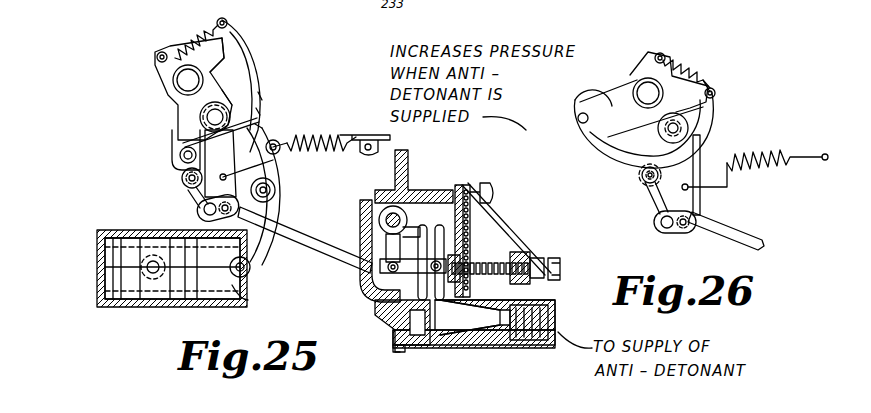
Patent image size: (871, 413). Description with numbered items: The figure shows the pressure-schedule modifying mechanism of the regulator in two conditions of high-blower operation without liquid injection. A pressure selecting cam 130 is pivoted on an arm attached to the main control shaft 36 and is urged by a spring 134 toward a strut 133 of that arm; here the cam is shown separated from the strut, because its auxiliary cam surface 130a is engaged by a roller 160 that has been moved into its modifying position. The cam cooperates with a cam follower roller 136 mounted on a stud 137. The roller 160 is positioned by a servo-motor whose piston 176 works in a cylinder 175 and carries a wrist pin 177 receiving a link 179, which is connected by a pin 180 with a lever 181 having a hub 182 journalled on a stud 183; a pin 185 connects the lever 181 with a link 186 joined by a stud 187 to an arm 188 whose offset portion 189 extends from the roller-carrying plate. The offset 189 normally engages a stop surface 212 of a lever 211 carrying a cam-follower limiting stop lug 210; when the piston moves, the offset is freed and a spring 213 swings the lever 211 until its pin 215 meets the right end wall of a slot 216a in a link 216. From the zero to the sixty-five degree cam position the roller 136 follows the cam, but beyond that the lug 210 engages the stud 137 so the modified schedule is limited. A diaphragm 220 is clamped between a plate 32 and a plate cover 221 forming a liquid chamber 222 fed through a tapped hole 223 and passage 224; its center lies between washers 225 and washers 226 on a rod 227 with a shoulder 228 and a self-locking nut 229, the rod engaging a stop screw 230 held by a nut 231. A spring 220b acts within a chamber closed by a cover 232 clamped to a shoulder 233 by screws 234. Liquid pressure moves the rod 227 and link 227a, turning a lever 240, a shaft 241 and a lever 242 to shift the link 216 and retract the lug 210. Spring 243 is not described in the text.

In FIG. 25, the main control shaft 36 is at (186, 81).
In FIG. 26, the main control shaft 36 is at (646, 80).
In FIG. 25, the strut 133 is at (216, 52).
In FIG. 26, the strut 133 is at (691, 72).
In FIG. 25, the auxiliary cam surface 130a is at (233, 88).
In FIG. 26, the auxiliary cam surface 130a is at (628, 90).
In FIG. 25, the spring 134 is at (182, 32).
In FIG. 26, the spring 134 is at (706, 82).
In FIG. 25, the pressure selecting cam 130 is at (254, 52).
In FIG. 26, the pressure selecting cam 130 is at (714, 101).
In FIG. 25, the roller 160 is at (200, 118).
In FIG. 26, the roller 160 is at (627, 146).
In FIG. 25, the arm 188 is at (262, 100).
In FIG. 25, the offset portion 189 is at (261, 115).
In FIG. 25, the link 186 is at (262, 128).
In FIG. 25, the stud 187 is at (178, 137).
In FIG. 25, the cam-follower limiting stop lug 210 is at (180, 155).
In FIG. 26, the cam-follower limiting stop lug 210 is at (641, 177).
In FIG. 25, the cam follower roller 136 is at (182, 177).
In FIG. 26, the cam follower roller 136 is at (642, 182).
In FIG. 25, the stud 137 is at (182, 176).
In FIG. 26, the stud 137 is at (632, 196).
In FIG. 25, the lever 211 is at (200, 193).
In FIG. 26, the lever 211 is at (672, 193).
In FIG. 25, the pin 185 is at (258, 157).
In FIG. 25, the stop surface 212 is at (279, 146).
In FIG. 26, the stop surface 212 is at (700, 158).
In FIG. 25, the spring 243 is at (322, 152).
In FIG. 25, the lever 181 is at (268, 208).
In FIG. 25, the hub 182 is at (268, 190).
In FIG. 25, the stud 183 is at (275, 193).
In FIG. 25, the slot 216a is at (210, 214).
In FIG. 26, the slot 216a is at (667, 228).
In FIG. 25, the pin 215 is at (212, 218).
In FIG. 26, the pin 215 is at (683, 235).
In FIG. 25, the link 216 is at (292, 236).
In FIG. 26, the link 216 is at (720, 232).
In FIG. 25, the pin 180 is at (251, 272).
In FIG. 25, the link 179 is at (246, 299).
In FIG. 25, the piston 176 is at (100, 262).
In FIG. 25, the cylinder 175 is at (105, 292).
In FIG. 25, the wrist pin 177 is at (156, 275).
In FIG. 25, the link 227a is at (378, 292).
In FIG. 25, the plate 32 is at (407, 185).
In FIG. 25, the shaft 241 is at (398, 208).
In FIG. 25, the lever 242 is at (378, 220).
In FIG. 25, the lever 240 is at (389, 269).
In FIG. 25, the washers 226 is at (432, 190).
In FIG. 25, the washers 225 is at (459, 184).
In FIG. 25, the diaphragm 220 is at (477, 182).
In FIG. 25, the plate cover 221 is at (488, 190).
In FIG. 25, the liquid chamber 222 is at (478, 232).
In FIG. 25, the rod 227 is at (492, 252).
In FIG. 25, the self-locking nut 231 is at (533, 260).
In FIG. 25, the stop screw 230 is at (555, 266).
In FIG. 25, the passage 224 is at (500, 340).
In FIG. 25, the self-locking nut 229 is at (470, 338).
In FIG. 25, the shoulder 228 is at (445, 346).
In FIG. 25, the tapped hole 223 is at (549, 322).
In FIG. 25, the cover 232 is at (400, 304).
In FIG. 25, the screws 234 is at (412, 328).
In FIG. 25, the spring 220b is at (372, 340).
In FIG. 25, the shoulder 233 is at (400, 350).
In FIG. 26, the spring 213 is at (777, 155).